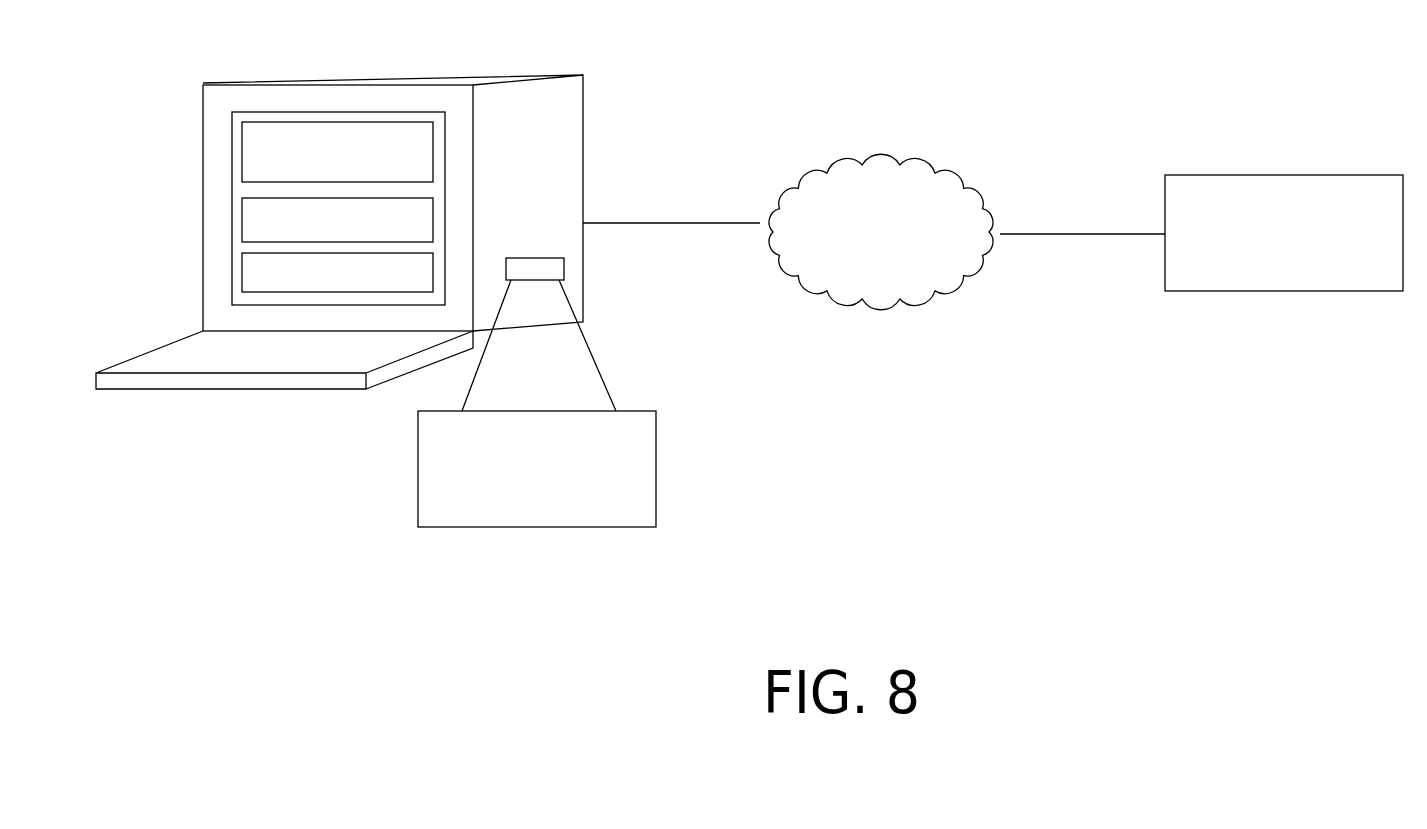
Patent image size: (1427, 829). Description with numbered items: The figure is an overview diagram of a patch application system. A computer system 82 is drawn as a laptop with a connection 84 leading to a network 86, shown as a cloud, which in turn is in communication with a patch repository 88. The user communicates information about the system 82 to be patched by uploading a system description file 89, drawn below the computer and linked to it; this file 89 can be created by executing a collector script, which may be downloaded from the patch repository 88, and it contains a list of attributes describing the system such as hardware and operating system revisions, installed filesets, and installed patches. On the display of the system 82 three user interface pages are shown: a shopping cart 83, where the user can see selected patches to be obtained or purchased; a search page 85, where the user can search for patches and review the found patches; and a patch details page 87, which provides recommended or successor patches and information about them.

The system 82 is at (422, 75).
The shopping cart 83 is at (244, 159).
The connection 84 is at (655, 223).
The search page 85 is at (244, 217).
The network 86 is at (882, 150).
The patch details page 87 is at (244, 272).
The patch repository 88 is at (1268, 291).
The system description file 89 is at (657, 457).